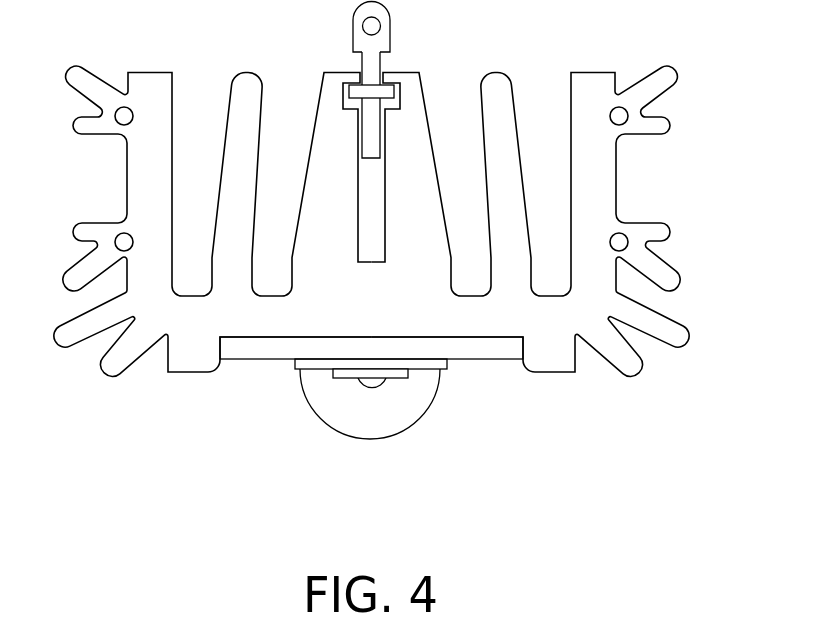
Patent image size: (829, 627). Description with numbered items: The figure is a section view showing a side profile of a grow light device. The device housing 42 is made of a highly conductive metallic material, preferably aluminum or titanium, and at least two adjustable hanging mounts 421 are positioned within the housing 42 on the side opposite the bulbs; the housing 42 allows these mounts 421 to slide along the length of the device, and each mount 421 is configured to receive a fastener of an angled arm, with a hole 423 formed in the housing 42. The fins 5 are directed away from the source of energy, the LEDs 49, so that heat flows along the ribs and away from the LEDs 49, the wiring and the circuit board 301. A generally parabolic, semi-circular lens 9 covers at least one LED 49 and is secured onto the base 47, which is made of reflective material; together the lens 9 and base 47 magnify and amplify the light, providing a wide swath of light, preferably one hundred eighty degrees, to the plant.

The fins 5 is at (389, 221).
The housing 42 is at (557, 221).
The adjustable hanging mount 421 is at (362, 25).
The through hole 423 is at (628, 115).
The circuit board 301 is at (502, 350).
The base 47 is at (428, 362).
The LED 49 is at (347, 372).
The lens 9 is at (380, 423).